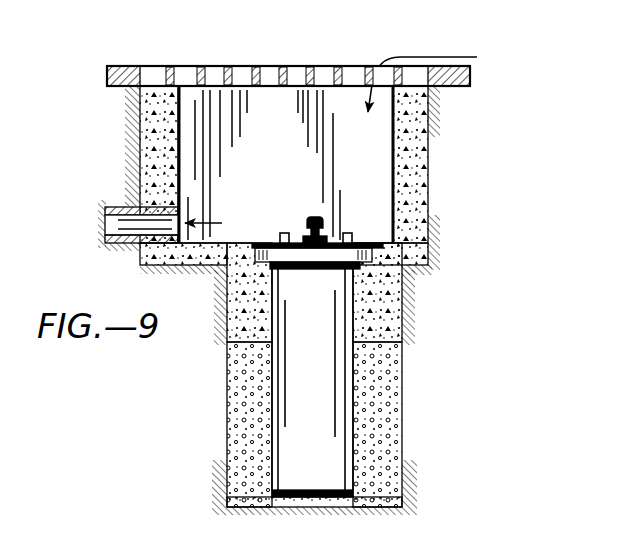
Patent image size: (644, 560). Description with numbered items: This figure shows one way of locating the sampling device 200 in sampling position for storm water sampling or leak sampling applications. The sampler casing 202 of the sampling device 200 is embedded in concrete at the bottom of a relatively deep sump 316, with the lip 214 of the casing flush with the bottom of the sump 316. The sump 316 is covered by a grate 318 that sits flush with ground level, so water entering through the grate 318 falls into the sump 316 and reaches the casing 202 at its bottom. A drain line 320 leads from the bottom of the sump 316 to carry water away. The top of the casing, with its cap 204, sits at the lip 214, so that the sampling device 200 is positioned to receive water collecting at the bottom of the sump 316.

The grate 318 is at (272, 66).
The sump 316 is at (198, 159).
The drain line 320 is at (108, 228).
The lip 214 is at (262, 241).
The well cap 204 is at (328, 236).
The sampler casing 202 is at (335, 351).
The sampling device 200 is at (326, 399).